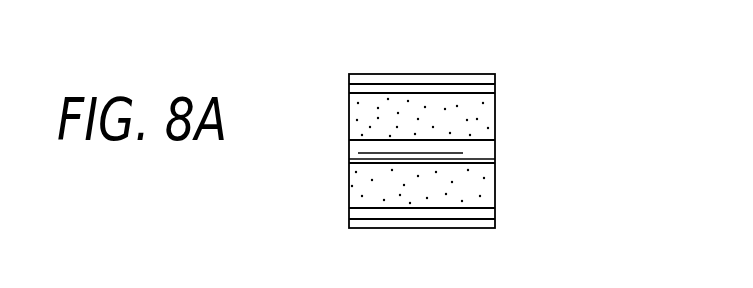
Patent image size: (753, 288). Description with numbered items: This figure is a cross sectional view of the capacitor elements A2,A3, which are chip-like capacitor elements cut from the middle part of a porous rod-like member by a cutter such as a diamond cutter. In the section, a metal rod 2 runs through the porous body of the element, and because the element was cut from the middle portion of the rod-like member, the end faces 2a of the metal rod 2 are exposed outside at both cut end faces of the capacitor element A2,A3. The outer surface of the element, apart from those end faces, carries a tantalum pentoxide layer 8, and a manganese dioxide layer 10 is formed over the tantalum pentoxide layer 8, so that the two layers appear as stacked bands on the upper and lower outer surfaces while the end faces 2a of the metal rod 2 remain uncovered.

The capacitor elements A2,A3 is at (514, 104).
The manganese dioxide layer 10 is at (443, 78).
The tantalum pentoxide layer 8 is at (383, 88).
The metal rod 2 is at (495, 152).
The end faces 2a is at (495, 163).